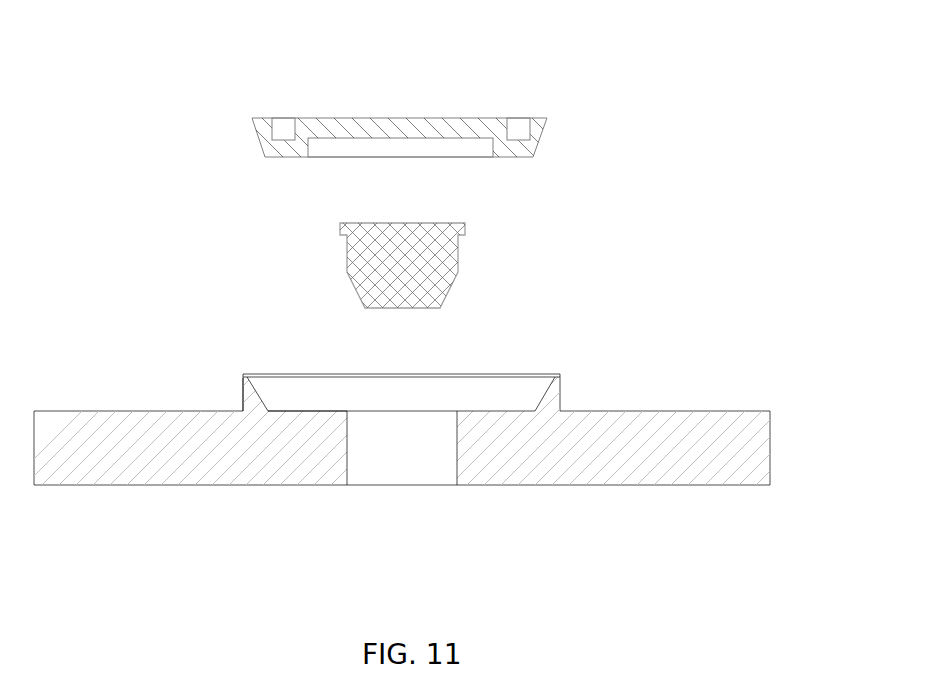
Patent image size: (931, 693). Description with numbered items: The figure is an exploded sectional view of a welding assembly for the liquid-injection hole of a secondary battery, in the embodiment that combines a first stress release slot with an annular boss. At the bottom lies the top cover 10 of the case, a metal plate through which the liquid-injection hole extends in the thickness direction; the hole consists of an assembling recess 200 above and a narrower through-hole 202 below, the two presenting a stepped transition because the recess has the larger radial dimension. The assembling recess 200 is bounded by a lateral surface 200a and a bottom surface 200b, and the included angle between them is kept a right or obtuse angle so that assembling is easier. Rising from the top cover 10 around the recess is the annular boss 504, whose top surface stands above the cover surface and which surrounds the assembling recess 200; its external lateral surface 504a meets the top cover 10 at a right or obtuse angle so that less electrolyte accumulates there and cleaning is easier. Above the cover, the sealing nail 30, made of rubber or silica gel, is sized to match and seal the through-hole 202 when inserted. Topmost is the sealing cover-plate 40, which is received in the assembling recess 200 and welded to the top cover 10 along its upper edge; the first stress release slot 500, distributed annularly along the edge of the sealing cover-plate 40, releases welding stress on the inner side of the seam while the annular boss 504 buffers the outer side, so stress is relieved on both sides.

The top cover of case 10 is at (642, 435).
The sealing nail 30 is at (435, 270).
The sealing cover-plate 40 is at (452, 132).
The first stress release slot 500 is at (290, 128).
The annular boss 504 is at (245, 377).
The external lateral surface 504a is at (243, 393).
The assembling recess 200 is at (483, 393).
The lateral surface 200a is at (263, 397).
The bottom surface 200b is at (335, 411).
The through-hole 202 is at (410, 473).